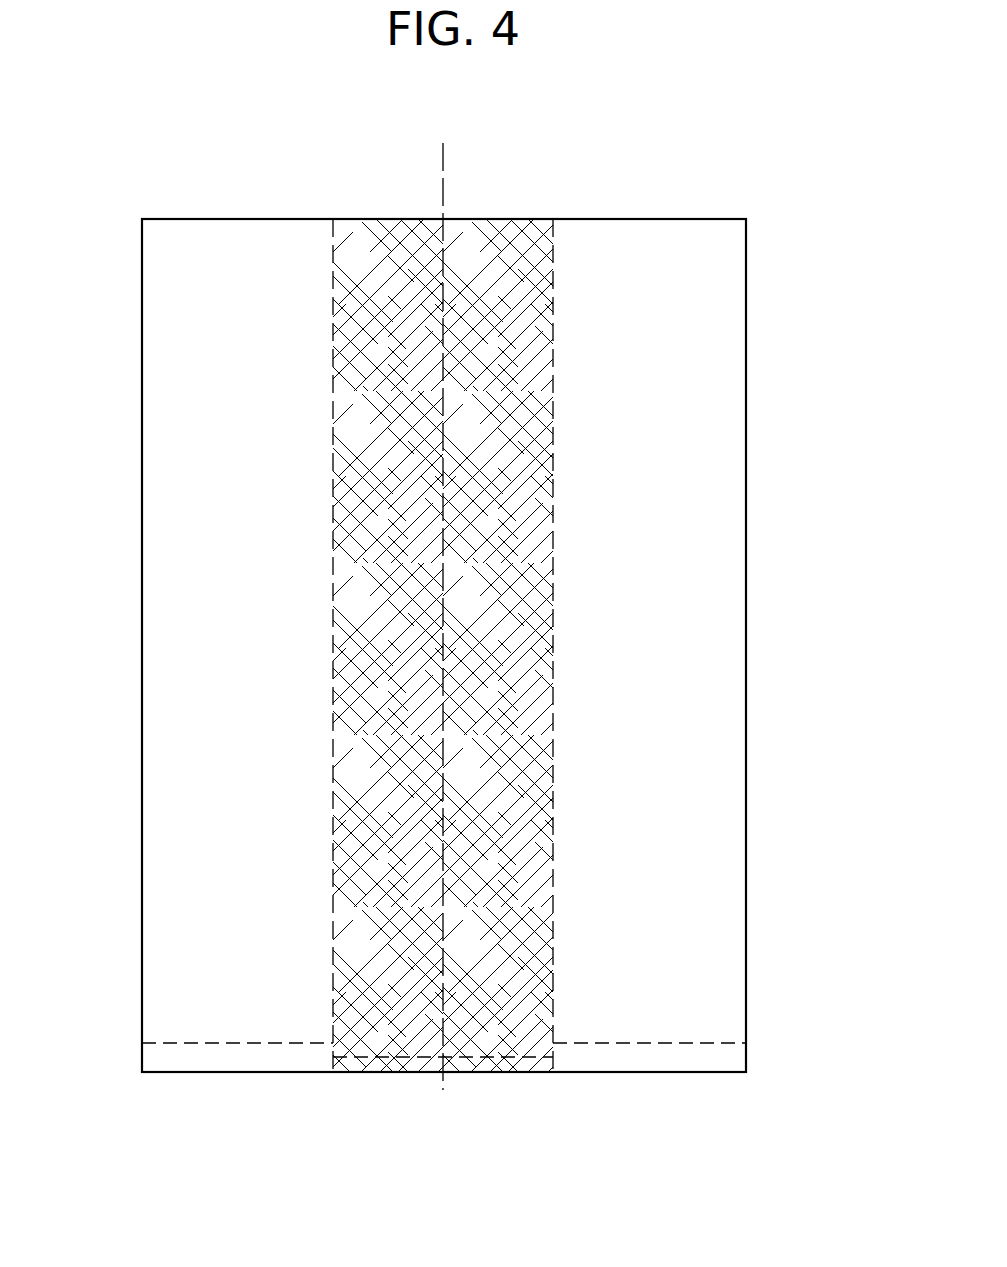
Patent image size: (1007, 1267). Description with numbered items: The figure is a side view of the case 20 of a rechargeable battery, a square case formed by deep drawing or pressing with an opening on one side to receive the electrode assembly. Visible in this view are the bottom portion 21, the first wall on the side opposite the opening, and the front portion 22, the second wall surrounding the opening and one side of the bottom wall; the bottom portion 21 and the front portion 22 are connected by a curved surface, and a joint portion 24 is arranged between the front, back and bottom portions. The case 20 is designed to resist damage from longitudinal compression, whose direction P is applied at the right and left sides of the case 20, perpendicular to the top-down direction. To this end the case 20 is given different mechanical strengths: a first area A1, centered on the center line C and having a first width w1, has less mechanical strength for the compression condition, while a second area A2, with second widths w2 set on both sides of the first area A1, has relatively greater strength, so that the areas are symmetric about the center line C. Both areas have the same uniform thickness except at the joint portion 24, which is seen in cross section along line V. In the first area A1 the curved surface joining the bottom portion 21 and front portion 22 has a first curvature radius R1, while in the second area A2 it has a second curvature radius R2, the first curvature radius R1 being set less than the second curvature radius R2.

The case 20 is at (772, 277).
The bottom portion 21 is at (380, 1074).
The front portion 22 is at (186, 468).
The joint portion 24 is at (730, 1060).
The first curvature radius R1 is at (412, 1053).
The second curvature radius R2 is at (648, 1043).
The center line C is at (445, 157).
The first area A1 is at (428, 613).
The second area A2 is at (221, 613).
The lateral/longitudinal compression direction P is at (112, 647).
The line V- V is at (128, 1017).
The first width w1 is at (333, 1080).
The second width w2 is at (142, 1080).